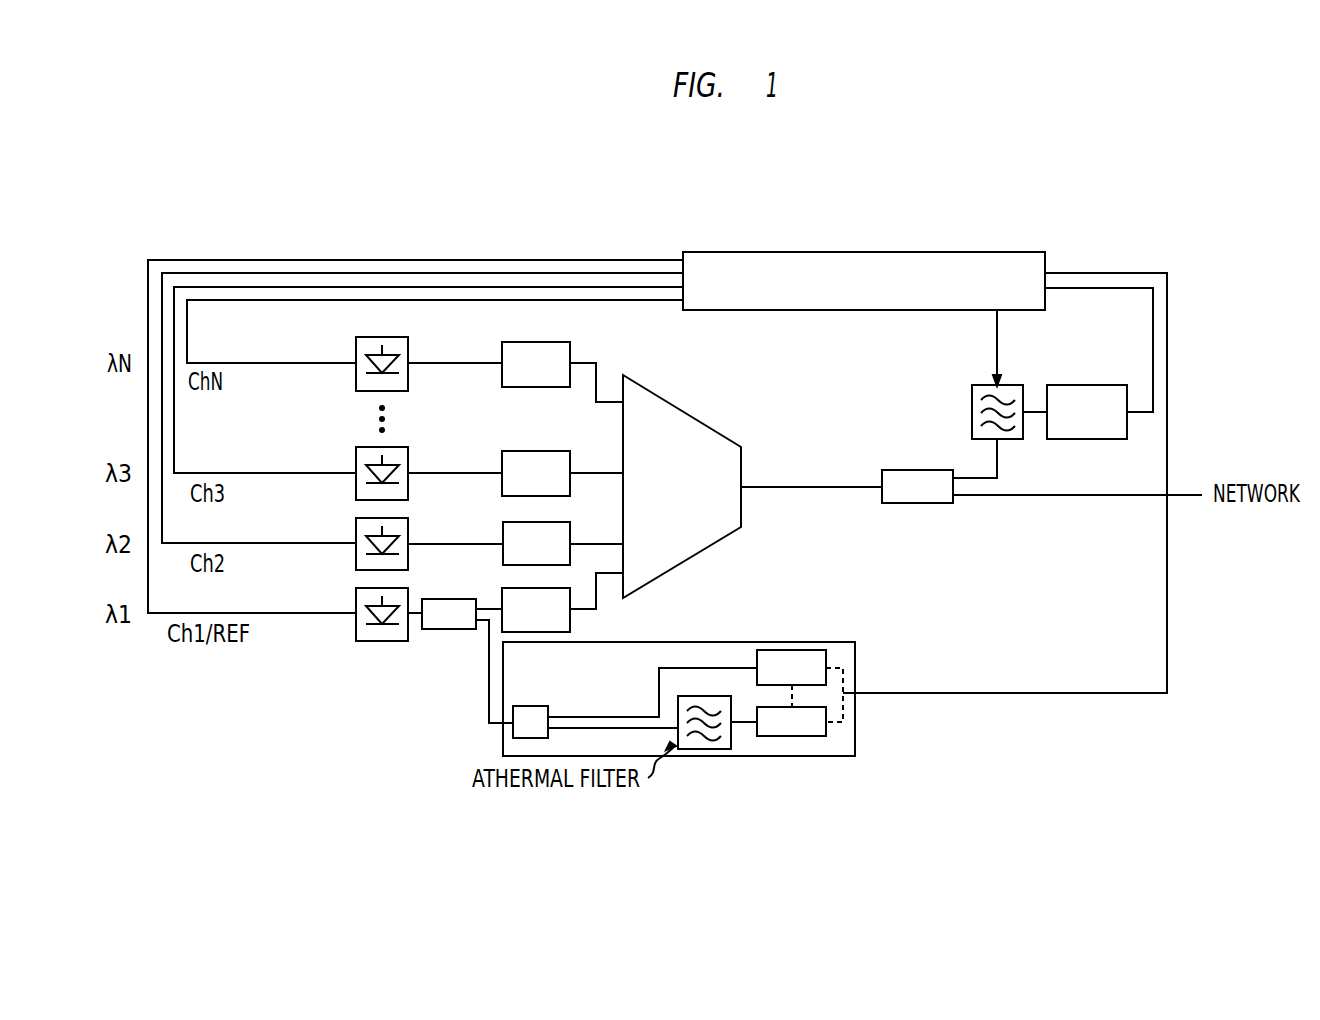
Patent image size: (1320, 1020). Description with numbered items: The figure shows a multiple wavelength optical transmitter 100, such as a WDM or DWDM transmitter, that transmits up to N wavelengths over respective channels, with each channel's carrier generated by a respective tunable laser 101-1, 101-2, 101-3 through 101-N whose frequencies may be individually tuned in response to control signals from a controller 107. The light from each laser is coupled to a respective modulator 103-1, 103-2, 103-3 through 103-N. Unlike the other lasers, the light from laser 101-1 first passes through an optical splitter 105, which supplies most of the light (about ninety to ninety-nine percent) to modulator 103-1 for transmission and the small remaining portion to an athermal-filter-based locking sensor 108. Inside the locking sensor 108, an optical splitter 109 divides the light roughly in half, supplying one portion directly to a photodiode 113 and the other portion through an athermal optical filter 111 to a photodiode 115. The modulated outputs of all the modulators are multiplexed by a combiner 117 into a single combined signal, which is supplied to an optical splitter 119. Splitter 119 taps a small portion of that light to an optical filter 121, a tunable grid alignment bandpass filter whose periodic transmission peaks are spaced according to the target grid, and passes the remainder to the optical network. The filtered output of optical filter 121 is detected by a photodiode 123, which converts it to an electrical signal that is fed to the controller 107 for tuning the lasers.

The multiple wavelength optical transmitter 100 is at (1293, 167).
The tunable laser 101-N is at (355, 387).
The tunable laser 101-3 is at (357, 497).
The tunable laser 101-2 is at (357, 567).
The tunable laser 101-1 is at (360, 634).
The modulator 103-N is at (503, 346).
The modulator 103-3 is at (503, 456).
The modulator 103-2 is at (503, 524).
The modulator 103-1 is at (502, 592).
The optical splitter 105 is at (450, 630).
The controller 107 is at (981, 252).
The athermal-filter-based locking sensor 108 is at (856, 647).
The optical splitter 109 is at (528, 706).
The athermal optical filter 111 is at (703, 750).
The photodiode 113 is at (793, 650).
The photodiode 115 is at (795, 737).
The combiner 117 is at (690, 414).
The optical splitter 119 is at (916, 470).
The optical filter 121 is at (1016, 385).
The photodiode 123 is at (1085, 385).